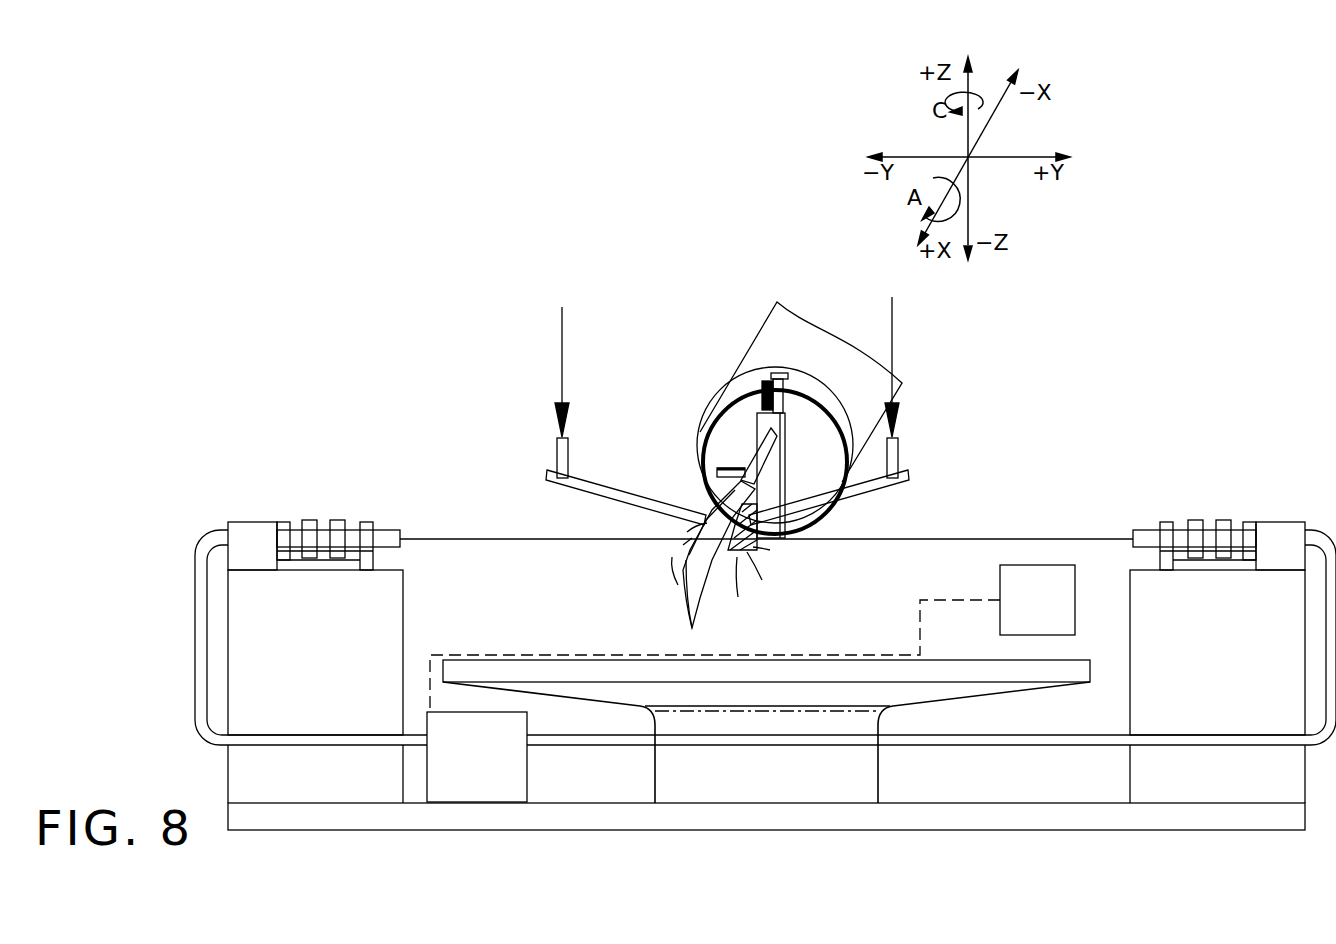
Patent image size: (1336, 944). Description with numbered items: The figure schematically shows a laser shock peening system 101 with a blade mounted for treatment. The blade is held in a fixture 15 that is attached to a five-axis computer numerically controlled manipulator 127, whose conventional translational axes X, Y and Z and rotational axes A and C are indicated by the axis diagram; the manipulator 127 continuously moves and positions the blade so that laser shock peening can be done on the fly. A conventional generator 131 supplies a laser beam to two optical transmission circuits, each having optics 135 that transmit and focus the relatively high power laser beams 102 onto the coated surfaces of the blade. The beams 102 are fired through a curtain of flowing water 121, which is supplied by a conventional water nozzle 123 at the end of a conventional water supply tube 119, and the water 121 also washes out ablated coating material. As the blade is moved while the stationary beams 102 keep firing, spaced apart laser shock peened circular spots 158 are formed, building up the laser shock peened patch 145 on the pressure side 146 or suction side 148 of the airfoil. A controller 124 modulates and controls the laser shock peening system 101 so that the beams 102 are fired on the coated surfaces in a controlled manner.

The fixture 15 is at (707, 423).
The laser shock peening system 101 is at (1101, 430).
The high power laser beams 102 is at (457, 537).
The water supply tube 119 is at (603, 497).
The curtain of flowing water 121 is at (672, 562).
The water nozzle 123 is at (785, 503).
The controller 124 is at (1056, 610).
The five-axis CNC manipulator 127 is at (770, 320).
The generator 131 is at (494, 766).
The optics 135 is at (312, 520).
The laser shock peened patch 145 is at (707, 507).
The pressure side 146 is at (700, 592).
The suction side 148 is at (690, 612).
The laser shock peened circular spots 158 is at (760, 558).